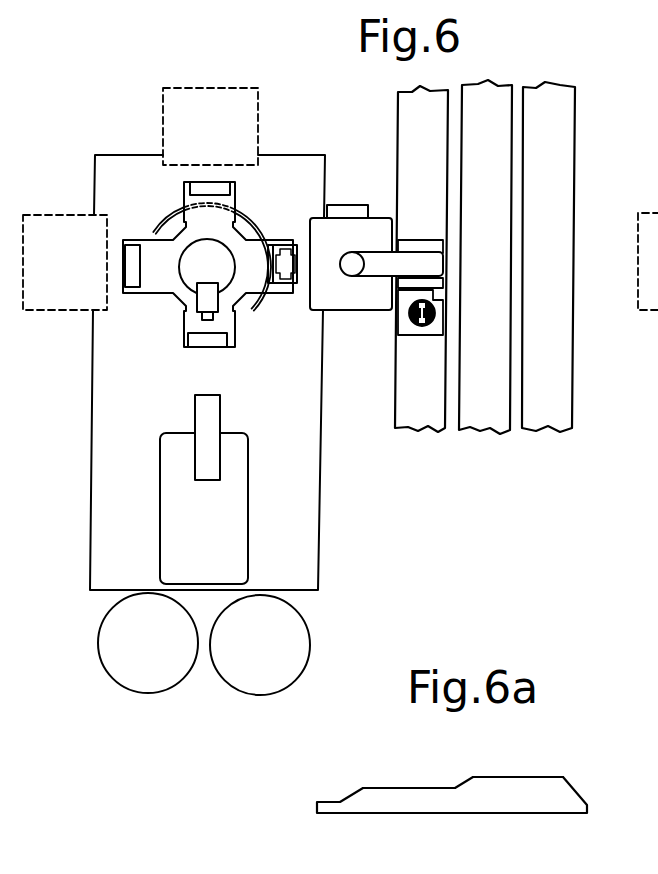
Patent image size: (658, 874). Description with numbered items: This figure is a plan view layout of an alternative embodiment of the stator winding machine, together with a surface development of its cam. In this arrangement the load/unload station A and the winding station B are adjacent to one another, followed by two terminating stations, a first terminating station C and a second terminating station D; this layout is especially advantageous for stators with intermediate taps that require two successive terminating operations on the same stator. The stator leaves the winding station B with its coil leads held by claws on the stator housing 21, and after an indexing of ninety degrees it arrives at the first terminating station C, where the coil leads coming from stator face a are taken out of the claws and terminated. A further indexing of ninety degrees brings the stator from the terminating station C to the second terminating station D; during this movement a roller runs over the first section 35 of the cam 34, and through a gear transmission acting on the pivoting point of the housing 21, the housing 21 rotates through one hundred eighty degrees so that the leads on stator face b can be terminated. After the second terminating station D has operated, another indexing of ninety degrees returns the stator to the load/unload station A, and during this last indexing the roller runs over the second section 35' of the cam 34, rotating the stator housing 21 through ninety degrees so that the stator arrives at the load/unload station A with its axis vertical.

In FIG. 6, the stator housing 21 is at (200, 345).
In FIG. 6, the cam 34 is at (252, 215).
In FIG. 6A, the cam 34 is at (547, 795).
In FIG. 6A, the first section of cam 35 is at (518, 753).
In FIG. 6A, the second section of cam 35' is at (409, 764).
In FIG. 6, the load/unload station A is at (359, 334).
In FIG. 6, the winding station B is at (263, 502).
In FIG. 6, the first terminating station C is at (65, 216).
In FIG. 6, the second terminating station D is at (235, 97).
In FIG. 6, the stator face a is at (169, 275).
In FIG. 6, the stator face b is at (225, 248).